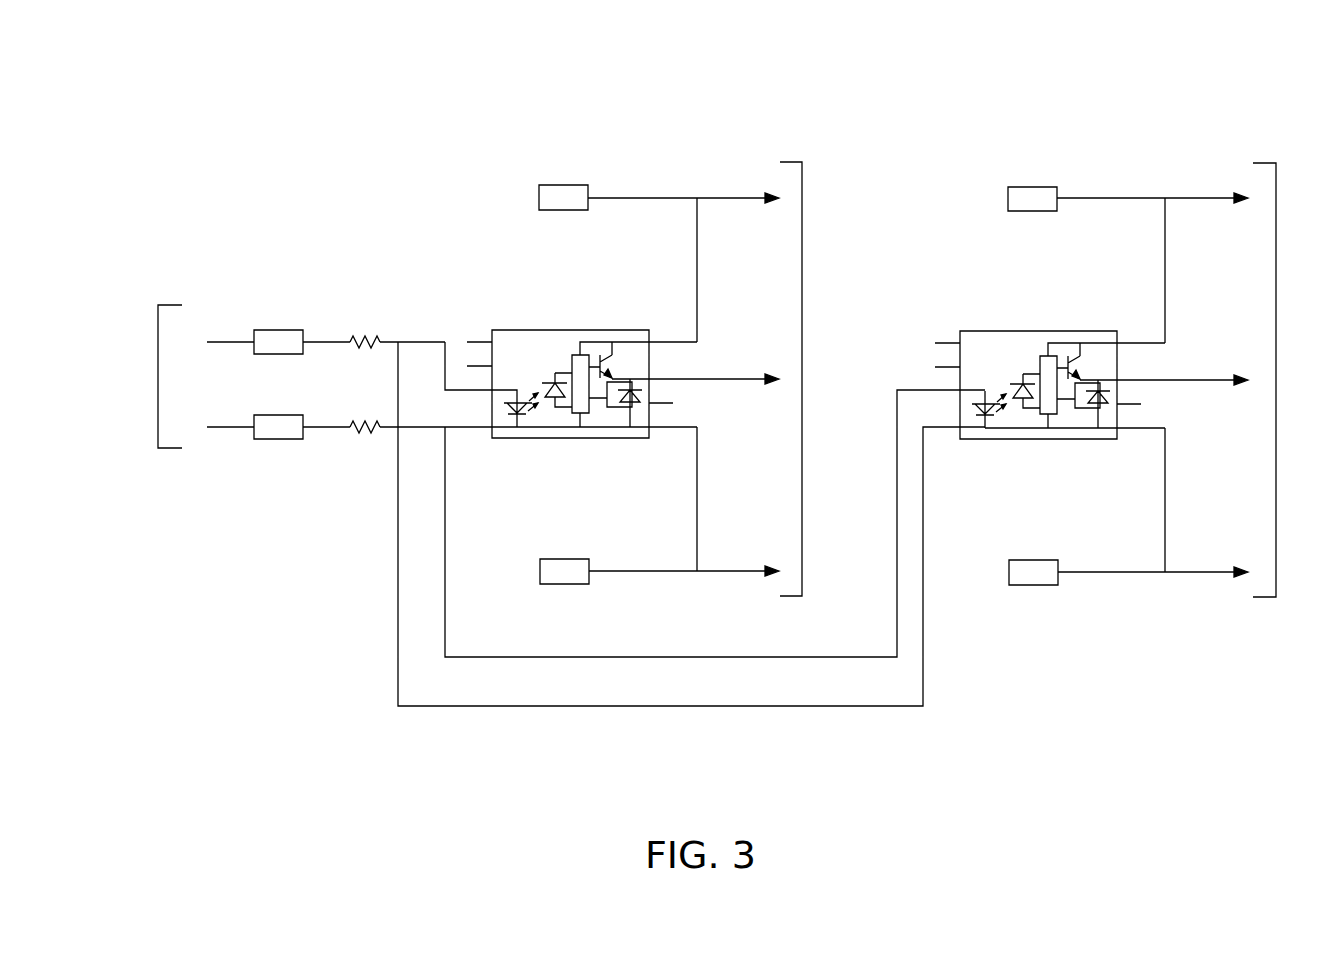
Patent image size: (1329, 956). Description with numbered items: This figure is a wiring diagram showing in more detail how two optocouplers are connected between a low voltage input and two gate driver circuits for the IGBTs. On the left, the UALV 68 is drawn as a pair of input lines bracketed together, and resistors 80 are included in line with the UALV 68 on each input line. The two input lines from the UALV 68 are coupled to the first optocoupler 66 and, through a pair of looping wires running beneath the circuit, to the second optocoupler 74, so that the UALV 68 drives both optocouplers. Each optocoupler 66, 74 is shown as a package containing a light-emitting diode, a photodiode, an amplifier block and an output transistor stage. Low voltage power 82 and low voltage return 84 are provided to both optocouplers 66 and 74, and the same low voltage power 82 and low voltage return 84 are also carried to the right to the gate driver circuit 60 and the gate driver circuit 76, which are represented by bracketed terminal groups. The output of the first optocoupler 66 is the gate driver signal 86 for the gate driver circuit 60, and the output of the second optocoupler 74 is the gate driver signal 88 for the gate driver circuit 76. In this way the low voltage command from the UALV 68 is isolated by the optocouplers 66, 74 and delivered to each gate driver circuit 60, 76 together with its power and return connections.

The gate driver circuit 60 is at (802, 234).
The optocoupler 66 is at (555, 330).
The UALV 68 is at (158, 353).
The optocoupler 74 is at (1035, 331).
The gate driver circuit 76 is at (1276, 212).
The resistors 80 is at (349, 338).
The low voltage power 82 is at (553, 185).
The low voltage return 84 is at (562, 559).
The gate driver signal 86 is at (720, 379).
The gate driver signal 88 is at (1205, 380).